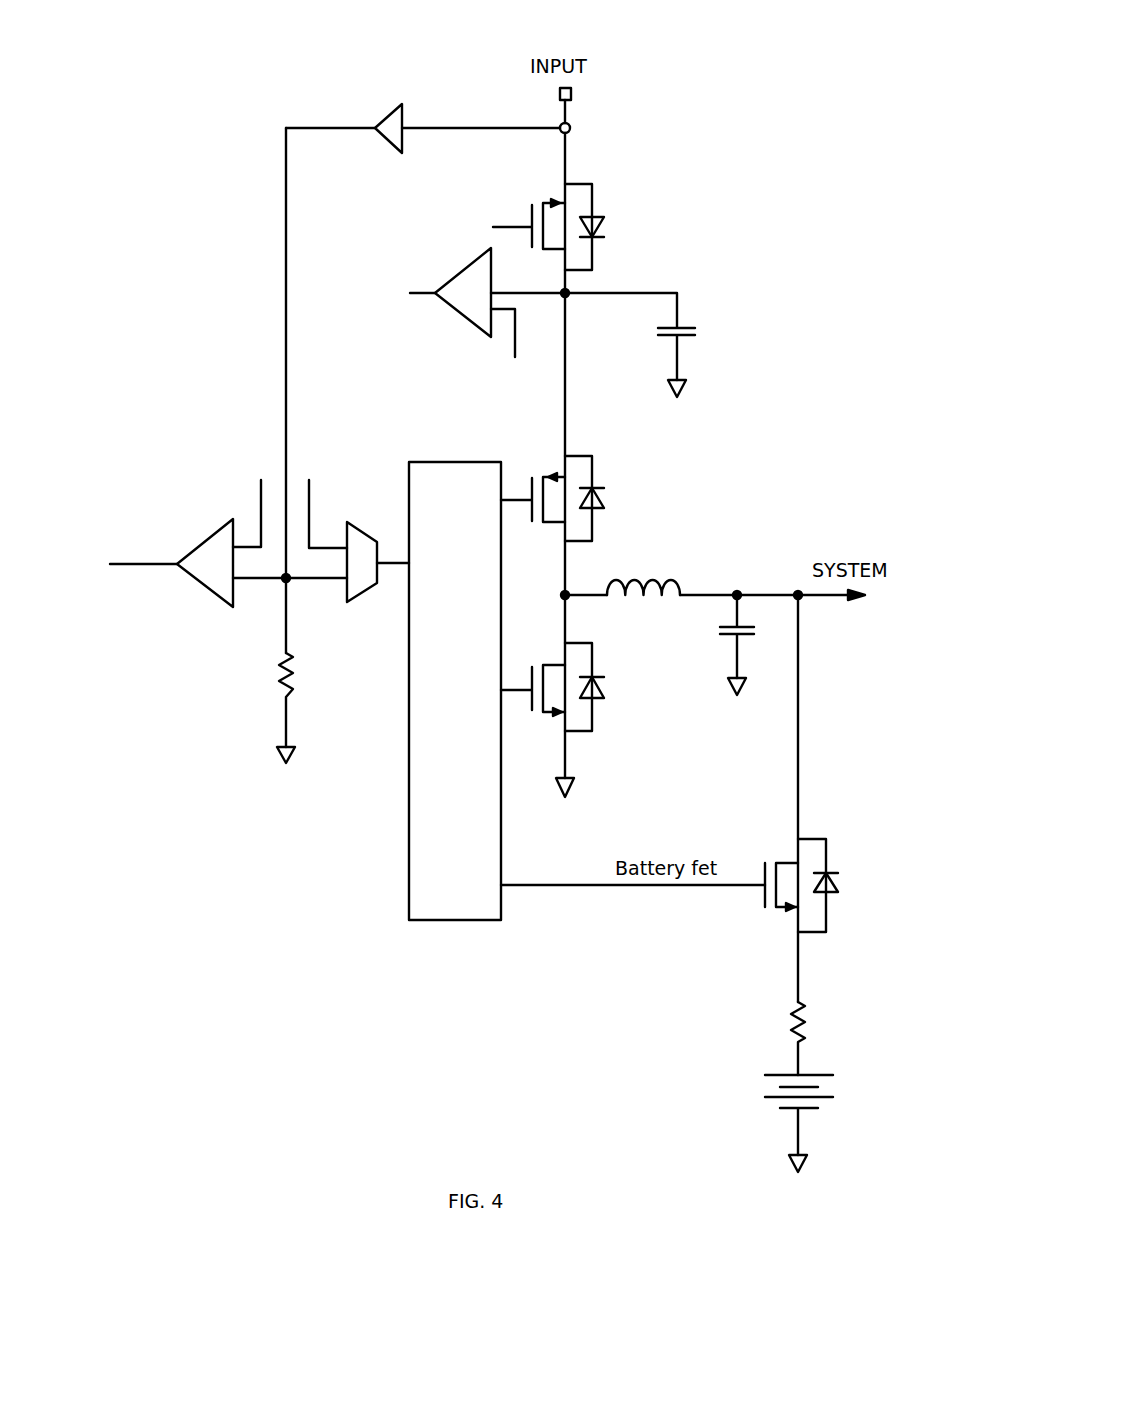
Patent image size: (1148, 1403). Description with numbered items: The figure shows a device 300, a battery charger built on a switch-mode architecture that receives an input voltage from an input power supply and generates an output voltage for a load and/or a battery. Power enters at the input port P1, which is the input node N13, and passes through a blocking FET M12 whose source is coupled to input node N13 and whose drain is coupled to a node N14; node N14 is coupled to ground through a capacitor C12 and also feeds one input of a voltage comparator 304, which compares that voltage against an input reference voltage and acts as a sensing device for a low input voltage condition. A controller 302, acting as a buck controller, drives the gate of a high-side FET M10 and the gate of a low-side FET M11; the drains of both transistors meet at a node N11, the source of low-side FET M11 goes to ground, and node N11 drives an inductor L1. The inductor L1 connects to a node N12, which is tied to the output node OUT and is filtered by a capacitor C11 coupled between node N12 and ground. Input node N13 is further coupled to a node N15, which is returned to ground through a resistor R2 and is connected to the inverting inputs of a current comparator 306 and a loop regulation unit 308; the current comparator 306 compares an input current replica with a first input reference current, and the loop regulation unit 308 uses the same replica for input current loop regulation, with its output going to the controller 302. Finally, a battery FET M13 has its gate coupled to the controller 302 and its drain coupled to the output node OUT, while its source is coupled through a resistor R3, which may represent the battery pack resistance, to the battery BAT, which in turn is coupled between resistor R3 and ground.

The device 300 is at (766, 82).
The controller 302 is at (448, 462).
The voltage comparator 304 is at (458, 272).
The current comparator 306 is at (211, 598).
The loop regulation unit 308 is at (358, 522).
The input pin P1 is at (560, 94).
The input node N13 is at (571, 128).
The node N14 is at (568, 296).
The node N11 is at (561, 598).
The node N12 is at (736, 590).
The node N15 is at (283, 582).
The blocking FET M12 is at (573, 227).
The high-side FET M10 is at (577, 498).
The low-side FET M11 is at (577, 687).
The battery FET M13 is at (694, 885).
The capacitor C12 is at (650, 345).
The capacitor C11 is at (717, 645).
The inductor L1 is at (622, 574).
The resistor R2 is at (271, 708).
The resistor R3 is at (779, 1038).
The output node OUT is at (798, 590).
The battery BAT is at (823, 1114).